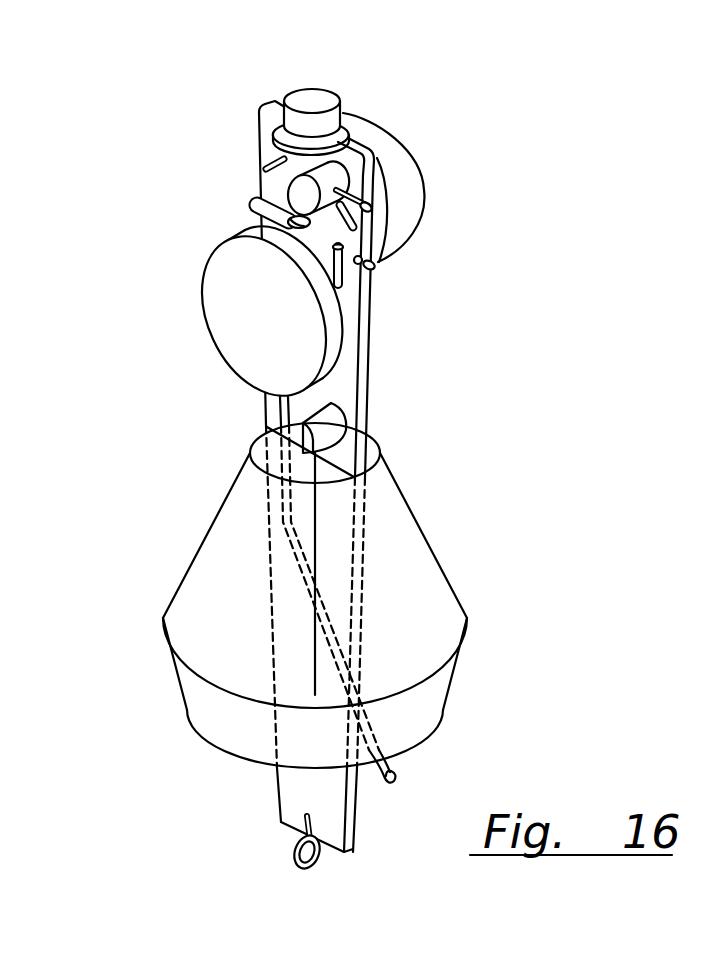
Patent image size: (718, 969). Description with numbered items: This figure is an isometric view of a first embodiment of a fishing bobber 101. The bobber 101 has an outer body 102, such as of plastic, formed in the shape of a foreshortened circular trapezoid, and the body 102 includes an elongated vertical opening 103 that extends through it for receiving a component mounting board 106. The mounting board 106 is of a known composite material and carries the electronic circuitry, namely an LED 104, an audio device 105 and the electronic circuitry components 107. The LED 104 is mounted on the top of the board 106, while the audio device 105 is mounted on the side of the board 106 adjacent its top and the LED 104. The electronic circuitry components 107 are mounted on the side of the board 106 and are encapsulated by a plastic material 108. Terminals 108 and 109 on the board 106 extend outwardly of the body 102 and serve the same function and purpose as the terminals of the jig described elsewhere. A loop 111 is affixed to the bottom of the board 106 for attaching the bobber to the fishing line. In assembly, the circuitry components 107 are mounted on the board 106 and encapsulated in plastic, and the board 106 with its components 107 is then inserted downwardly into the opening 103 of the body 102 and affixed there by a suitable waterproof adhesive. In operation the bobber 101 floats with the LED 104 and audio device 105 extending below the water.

The fishing bobber 101 is at (419, 512).
The outer body 102 is at (454, 576).
The elongated vertical opening 103 is at (354, 477).
The LED 104 is at (289, 88).
The audio device 105 is at (380, 125).
The component mounting board 106 is at (370, 320).
The electronic circuitry components 107 is at (252, 193).
The terminal 108 is at (372, 205).
The terminal 109 is at (371, 270).
The loop 111 is at (299, 860).